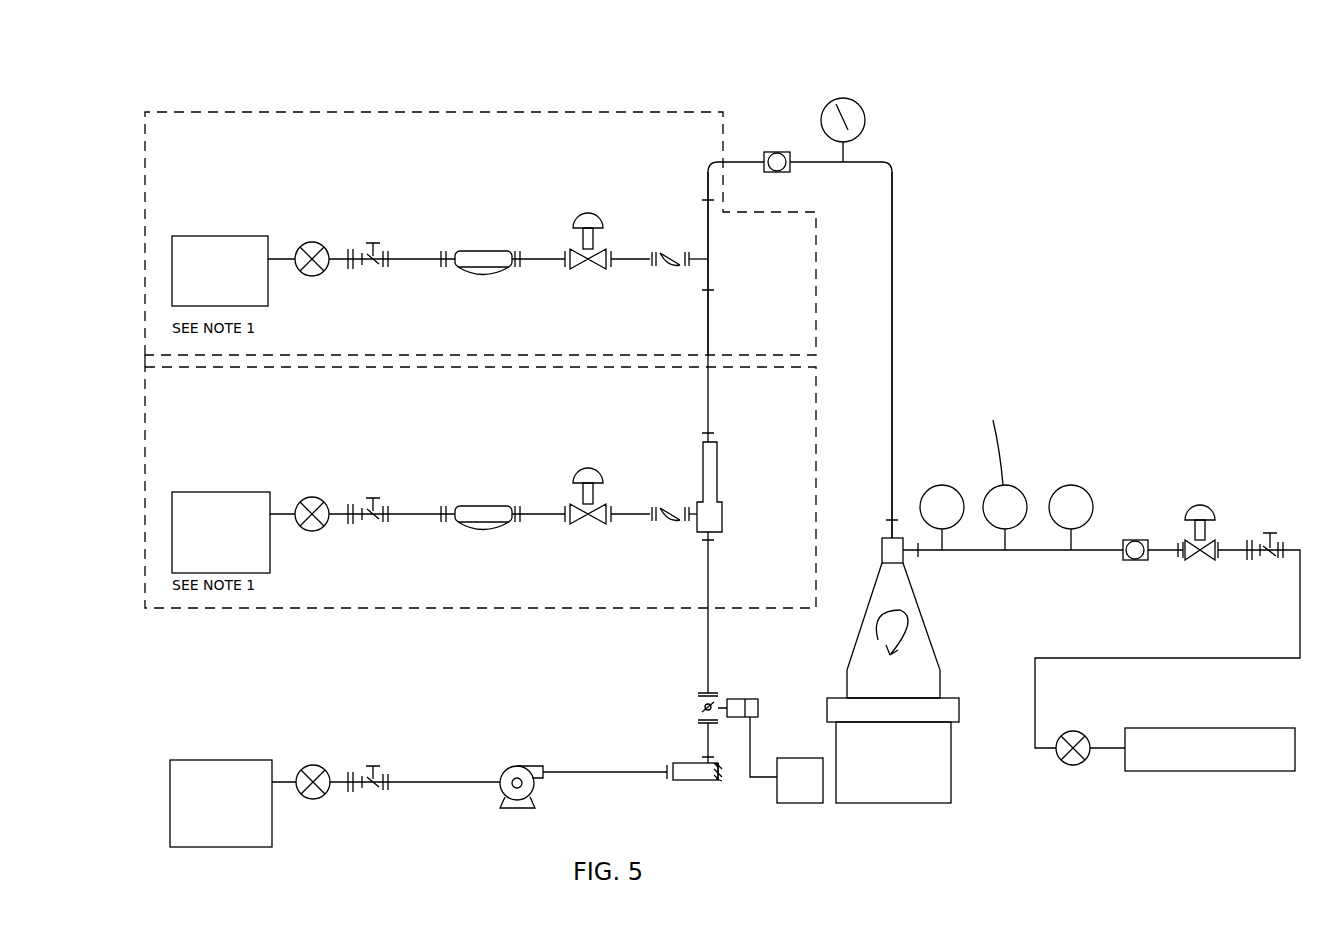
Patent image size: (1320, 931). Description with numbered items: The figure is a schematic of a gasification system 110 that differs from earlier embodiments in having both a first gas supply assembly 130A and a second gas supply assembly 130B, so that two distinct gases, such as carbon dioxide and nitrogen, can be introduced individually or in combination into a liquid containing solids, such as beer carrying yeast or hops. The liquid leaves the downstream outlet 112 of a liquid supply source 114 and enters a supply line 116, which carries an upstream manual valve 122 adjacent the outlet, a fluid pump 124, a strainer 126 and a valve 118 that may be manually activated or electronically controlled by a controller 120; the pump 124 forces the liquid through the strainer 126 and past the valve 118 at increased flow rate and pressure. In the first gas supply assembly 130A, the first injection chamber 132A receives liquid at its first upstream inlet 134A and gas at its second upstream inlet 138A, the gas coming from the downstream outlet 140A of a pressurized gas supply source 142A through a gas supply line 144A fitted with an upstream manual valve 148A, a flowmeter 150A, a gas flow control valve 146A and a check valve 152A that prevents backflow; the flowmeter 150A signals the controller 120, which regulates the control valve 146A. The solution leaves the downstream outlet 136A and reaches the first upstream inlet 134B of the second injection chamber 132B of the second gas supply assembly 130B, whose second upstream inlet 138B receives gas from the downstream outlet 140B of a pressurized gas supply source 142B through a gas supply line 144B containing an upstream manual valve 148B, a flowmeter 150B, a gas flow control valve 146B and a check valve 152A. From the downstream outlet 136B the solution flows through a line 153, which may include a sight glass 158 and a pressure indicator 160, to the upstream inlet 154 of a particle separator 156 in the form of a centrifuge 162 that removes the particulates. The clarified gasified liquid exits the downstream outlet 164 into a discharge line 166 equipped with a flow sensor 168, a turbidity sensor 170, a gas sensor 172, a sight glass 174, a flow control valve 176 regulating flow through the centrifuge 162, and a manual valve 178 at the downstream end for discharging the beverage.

The gasification system 110 is at (960, 73).
The downstream outlet 112 is at (272, 781).
The liquid supply source 114 is at (232, 760).
The supply line 116 is at (455, 783).
The valve 118 is at (715, 690).
The controller 120 is at (786, 791).
The upstream manual valve 122 is at (350, 795).
The fluid pump 124 is at (505, 770).
The strainer 126 is at (722, 780).
The first gas supply assembly 130A is at (316, 610).
The second gas supply assembly 130B is at (316, 110).
The first injection chamber 132A is at (718, 460).
The second injection chamber 132B is at (714, 205).
The first upstream inlet 134A is at (712, 538).
The first upstream inlet 134B is at (712, 283).
The downstream outlet 136A is at (706, 440).
The downstream outlet 136B is at (708, 190).
The second upstream inlet 138A is at (698, 506).
The second upstream inlet 138B is at (700, 252).
The downstream outlet 140A is at (272, 513).
The downstream outlet 140B is at (272, 258).
The pressurized gas supply source 142A is at (240, 492).
The pressurized gas supply source 142B is at (240, 236).
The gas supply line 144A is at (442, 517).
The gas supply line 144B is at (442, 262).
The gas flow control valve 146A is at (570, 512).
The gas flow control valve 146B is at (570, 257).
The upstream manual valve 148A is at (380, 507).
The upstream manual valve 148B is at (380, 252).
The flowmeter 150A is at (458, 507).
The flowmeter 150B is at (458, 252).
The check valve 152A is at (664, 252).
The line 153 is at (870, 162).
The upstream inlet 154 is at (888, 540).
The particle separator 156 is at (953, 662).
The sight glass 158 is at (777, 172).
The pressure indicator 160 is at (855, 155).
The centrifuge 162 is at (951, 778).
The downstream outlet 164 is at (900, 538).
The discharge line 166 is at (1000, 552).
The flow sensor 168 is at (958, 552).
The turbidity sensor 170 is at (1022, 552).
The gas sensor 172 is at (1088, 552).
The sight glass 174 is at (1138, 562).
The flow control valve 176 is at (1212, 508).
The manual valve 178 is at (1290, 546).